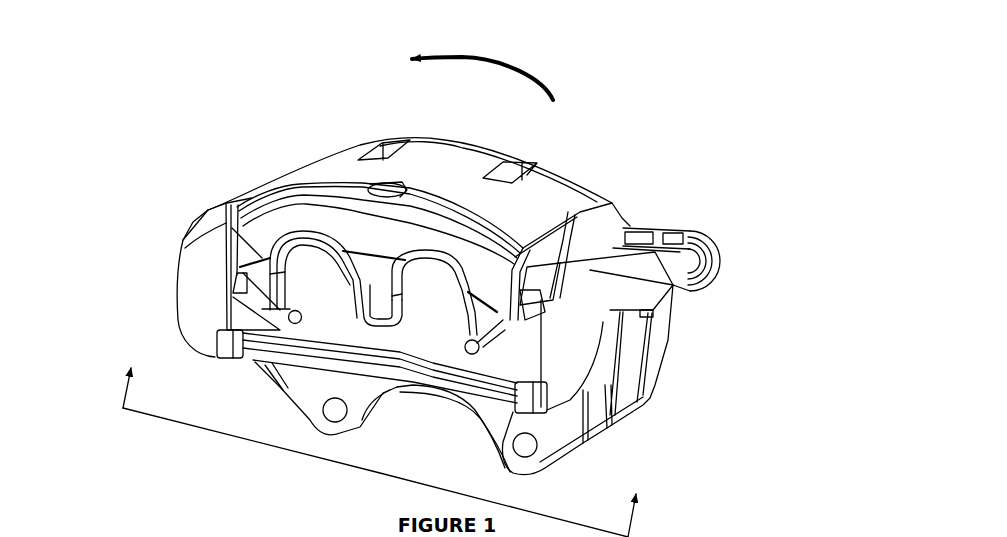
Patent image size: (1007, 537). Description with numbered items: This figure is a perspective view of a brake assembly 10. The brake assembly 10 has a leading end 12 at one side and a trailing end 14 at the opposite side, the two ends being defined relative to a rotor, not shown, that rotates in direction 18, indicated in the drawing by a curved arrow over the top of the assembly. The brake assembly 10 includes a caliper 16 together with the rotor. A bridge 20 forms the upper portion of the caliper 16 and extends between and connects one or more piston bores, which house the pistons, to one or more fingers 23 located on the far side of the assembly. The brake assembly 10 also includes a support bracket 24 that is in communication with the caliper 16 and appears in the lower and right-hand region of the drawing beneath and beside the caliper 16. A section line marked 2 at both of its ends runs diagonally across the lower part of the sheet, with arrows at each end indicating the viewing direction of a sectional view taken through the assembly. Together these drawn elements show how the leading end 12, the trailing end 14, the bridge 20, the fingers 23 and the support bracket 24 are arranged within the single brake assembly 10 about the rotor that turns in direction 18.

The section line 2- 2 is at (387, 445).
The brake assembly 10 is at (575, 152).
The leading end 12 is at (727, 242).
The trailing end 14 is at (180, 212).
The caliper 16 is at (268, 230).
The direction 18 is at (482, 60).
The bridge 20 is at (338, 167).
The fingers 23 is at (522, 317).
The support bracket 24 is at (560, 357).